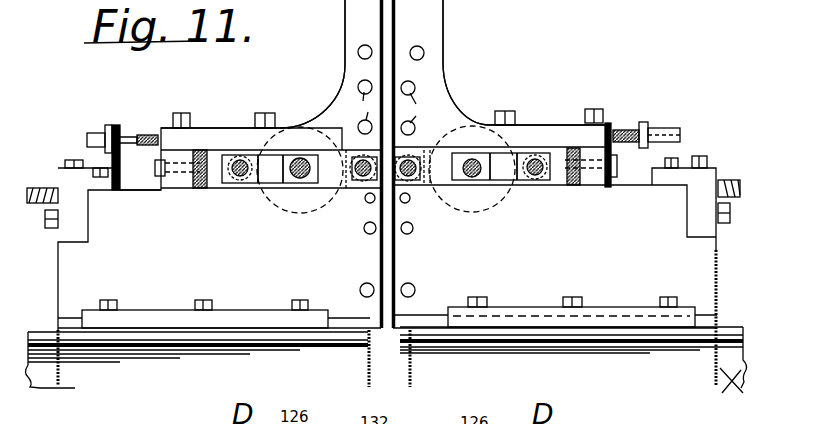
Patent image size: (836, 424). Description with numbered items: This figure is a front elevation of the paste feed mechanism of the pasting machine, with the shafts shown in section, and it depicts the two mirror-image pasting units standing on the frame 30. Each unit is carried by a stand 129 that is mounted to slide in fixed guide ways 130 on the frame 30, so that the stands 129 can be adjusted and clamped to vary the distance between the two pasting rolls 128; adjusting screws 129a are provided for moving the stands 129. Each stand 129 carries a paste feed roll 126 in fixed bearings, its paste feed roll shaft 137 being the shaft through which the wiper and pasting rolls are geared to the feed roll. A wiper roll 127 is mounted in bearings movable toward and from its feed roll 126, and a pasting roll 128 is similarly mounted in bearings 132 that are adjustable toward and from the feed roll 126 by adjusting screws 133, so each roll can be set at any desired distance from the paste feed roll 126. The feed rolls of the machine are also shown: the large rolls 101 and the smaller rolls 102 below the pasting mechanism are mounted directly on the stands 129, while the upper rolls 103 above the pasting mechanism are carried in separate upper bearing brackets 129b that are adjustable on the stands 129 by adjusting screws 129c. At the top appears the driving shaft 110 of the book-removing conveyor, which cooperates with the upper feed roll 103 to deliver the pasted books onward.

The frame 30 is at (45, 334).
The large rolls 101 is at (360, 290).
The smaller rolls 102 is at (366, 234).
The upper rolls 103 is at (397, 107).
The driving shaft 110 is at (425, 38).
The paste feed roll 126 is at (290, 215).
The wiper roll 127 is at (238, 185).
The pasting roll 128 is at (395, 189).
The stand 129 is at (70, 287).
The adjusting screws 129a is at (40, 182).
The upper bearing brackets 129b is at (338, 92).
The adjusting screws 129c is at (140, 120).
The guide ways 130 is at (163, 310).
The bearings 132 is at (338, 177).
The adjusting screws 133 is at (155, 165).
The paste feed roll shaft 137 is at (300, 158).